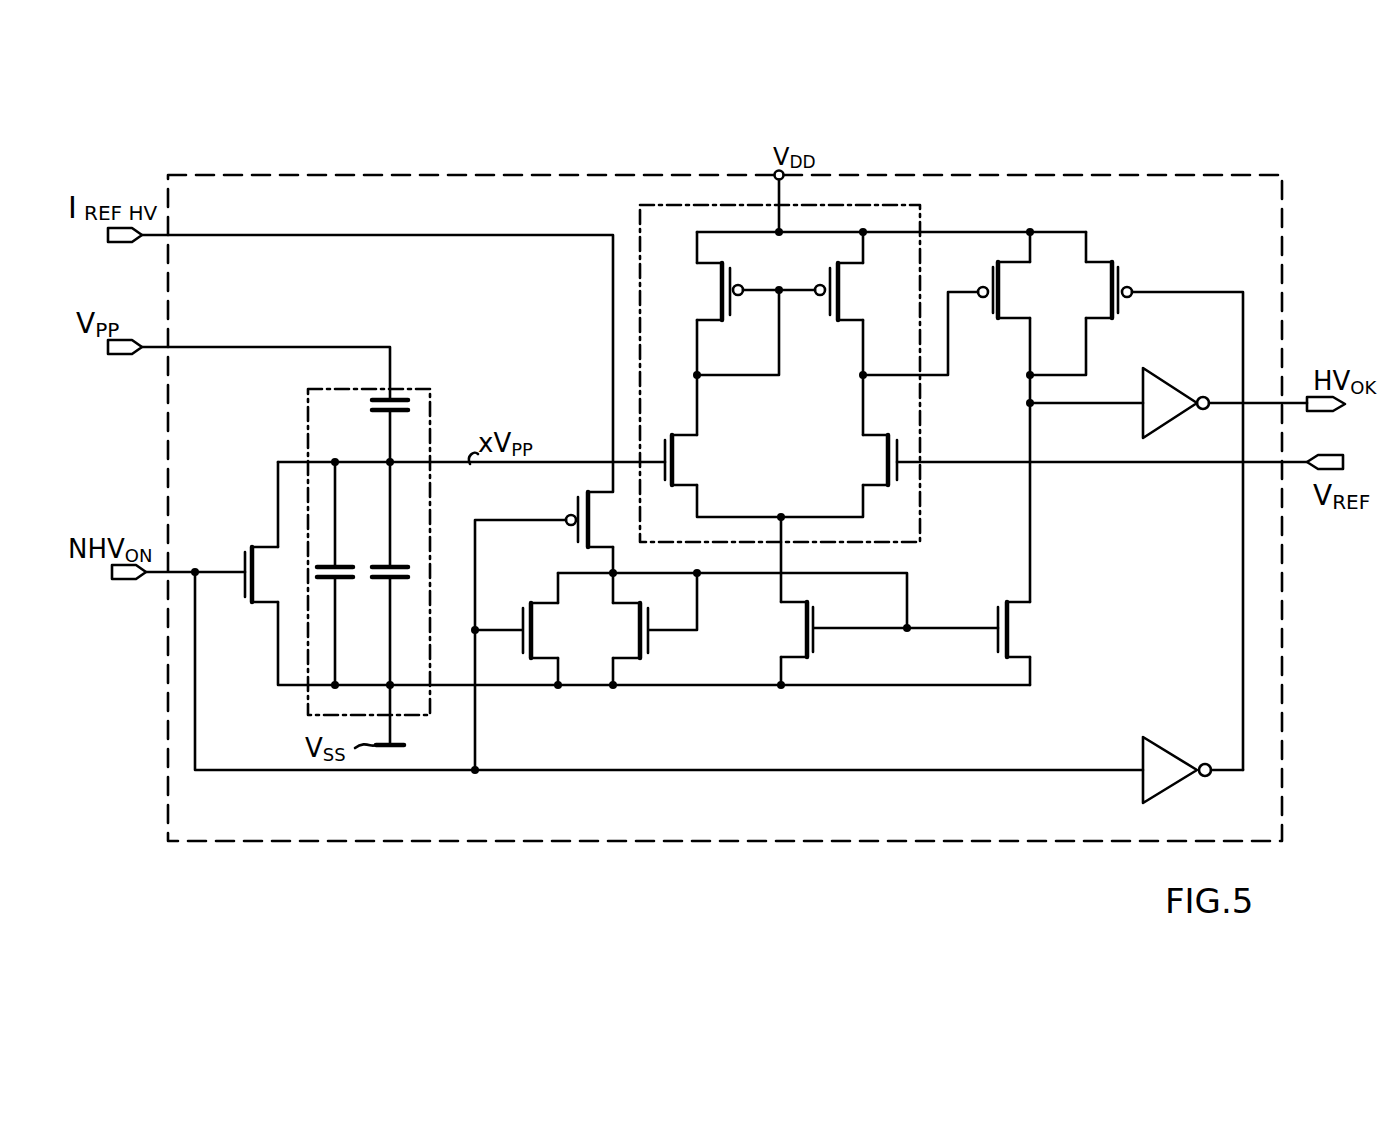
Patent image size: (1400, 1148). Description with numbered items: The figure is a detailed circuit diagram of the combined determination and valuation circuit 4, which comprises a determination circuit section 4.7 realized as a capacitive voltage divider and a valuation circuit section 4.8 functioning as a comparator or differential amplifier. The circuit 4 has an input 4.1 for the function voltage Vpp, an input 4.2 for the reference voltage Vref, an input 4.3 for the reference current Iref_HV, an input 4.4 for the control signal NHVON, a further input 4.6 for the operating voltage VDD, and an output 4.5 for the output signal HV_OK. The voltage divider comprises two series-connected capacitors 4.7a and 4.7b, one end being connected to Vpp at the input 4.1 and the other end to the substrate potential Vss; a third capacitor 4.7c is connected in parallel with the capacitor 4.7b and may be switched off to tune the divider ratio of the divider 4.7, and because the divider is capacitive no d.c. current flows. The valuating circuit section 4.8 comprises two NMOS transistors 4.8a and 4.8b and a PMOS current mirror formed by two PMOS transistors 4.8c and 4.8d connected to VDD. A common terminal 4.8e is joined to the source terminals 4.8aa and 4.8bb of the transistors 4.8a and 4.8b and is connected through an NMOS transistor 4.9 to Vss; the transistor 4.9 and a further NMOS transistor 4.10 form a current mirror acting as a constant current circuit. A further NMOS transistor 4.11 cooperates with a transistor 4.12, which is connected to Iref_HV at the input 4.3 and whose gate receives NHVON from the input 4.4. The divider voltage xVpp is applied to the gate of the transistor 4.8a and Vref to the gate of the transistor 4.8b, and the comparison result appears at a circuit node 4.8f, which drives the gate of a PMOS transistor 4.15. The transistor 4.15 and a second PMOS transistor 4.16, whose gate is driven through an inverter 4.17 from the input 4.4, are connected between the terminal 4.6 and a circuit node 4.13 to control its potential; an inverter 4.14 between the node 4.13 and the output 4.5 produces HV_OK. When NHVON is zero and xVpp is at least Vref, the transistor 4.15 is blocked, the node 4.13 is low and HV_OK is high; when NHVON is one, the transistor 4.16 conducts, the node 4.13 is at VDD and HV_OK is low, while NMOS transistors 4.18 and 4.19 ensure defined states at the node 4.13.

The combined determination and valuation circuit 4 is at (638, 843).
The input for the function voltage 4.1 is at (106, 350).
The input for the reference voltage 4.2 is at (1308, 480).
The input for the reference current 4.3 is at (106, 238).
The input for the control signal 4.4 is at (108, 575).
The output 4.5 is at (1304, 392).
The input for the operating voltage 4.6 is at (773, 172).
The determination circuit section 4.7 is at (355, 511).
The first capacitor 4.7a is at (396, 398).
The second capacitor 4.7b is at (398, 583).
The third capacitor 4.7c is at (325, 565).
The valuation circuit section 4.8 is at (870, 203).
The first NMOS transistor 4.8a is at (682, 458).
The source terminal of the first NMOS transistor 4.8aa is at (704, 488).
The second NMOS transistor 4.8b is at (904, 441).
The source terminal of the second NMOS transistor 4.8bb is at (880, 492).
The PMOS transistor of the current mirror 4.8c is at (742, 285).
The PMOS transistor of the current mirror 4.8d is at (820, 297).
The terminal of the valuating circuit section 4.8e is at (797, 517).
The circuit node of the valuating circuit 4.8f is at (862, 376).
The NMOS transistor 4.9 is at (818, 634).
The further NMOS transistor 4.10 is at (652, 634).
The further NMOS transistor 4.11 is at (1012, 630).
The PMOS transistor 4.12 is at (572, 513).
The circuit node 4.13 is at (1034, 406).
The inverter 4.14 is at (1172, 384).
The PMOS transistor 4.15 is at (989, 320).
The PMOS transistor 4.16 is at (1128, 286).
The inverter 4.17 is at (1168, 746).
The NMOS transistor 4.18 is at (240, 606).
The NMOS transistor 4.19 is at (521, 627).